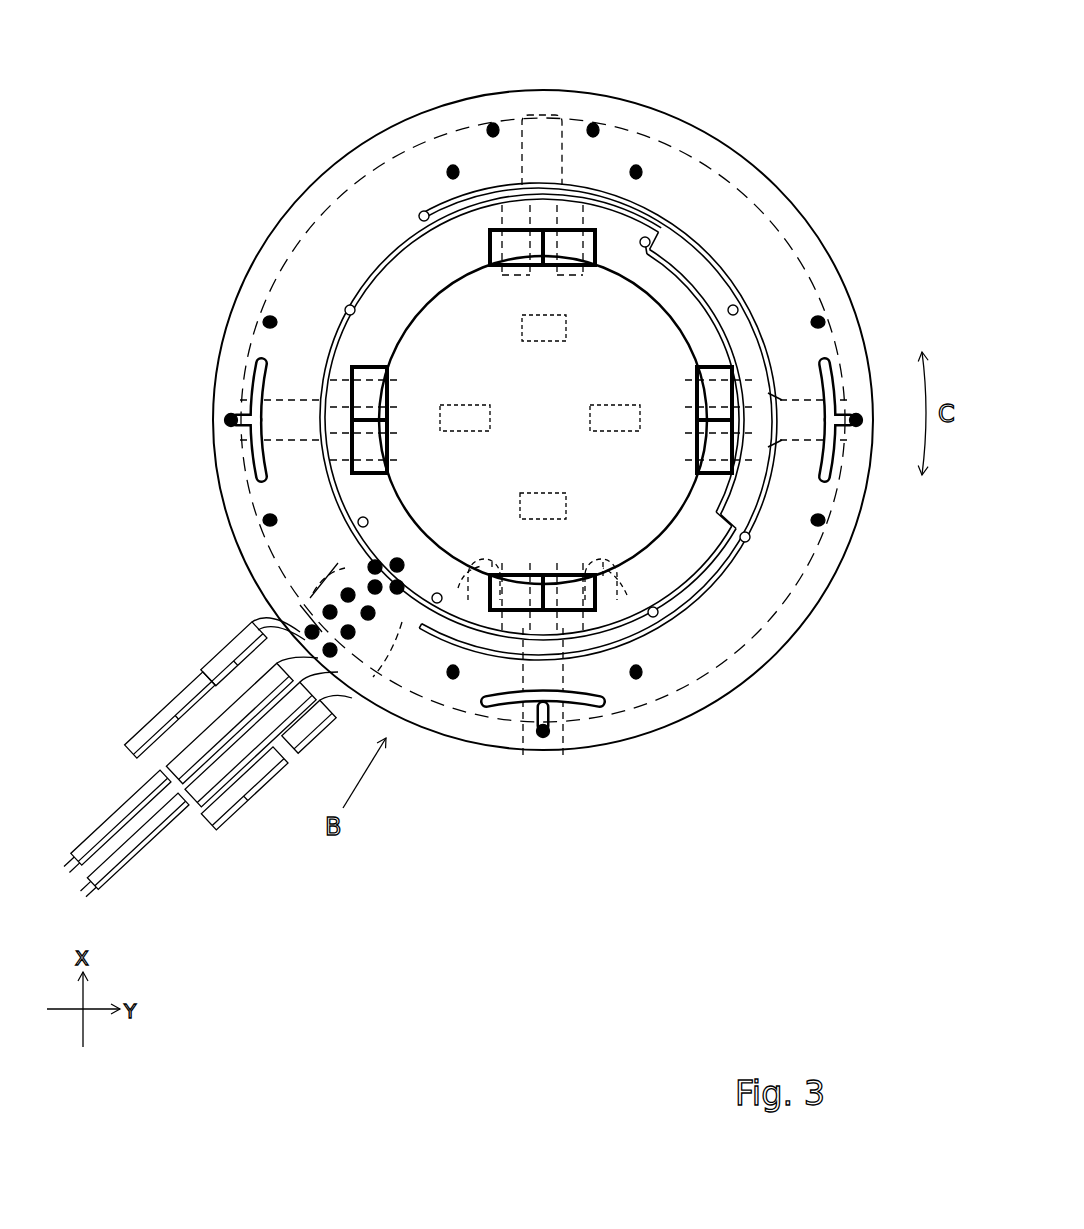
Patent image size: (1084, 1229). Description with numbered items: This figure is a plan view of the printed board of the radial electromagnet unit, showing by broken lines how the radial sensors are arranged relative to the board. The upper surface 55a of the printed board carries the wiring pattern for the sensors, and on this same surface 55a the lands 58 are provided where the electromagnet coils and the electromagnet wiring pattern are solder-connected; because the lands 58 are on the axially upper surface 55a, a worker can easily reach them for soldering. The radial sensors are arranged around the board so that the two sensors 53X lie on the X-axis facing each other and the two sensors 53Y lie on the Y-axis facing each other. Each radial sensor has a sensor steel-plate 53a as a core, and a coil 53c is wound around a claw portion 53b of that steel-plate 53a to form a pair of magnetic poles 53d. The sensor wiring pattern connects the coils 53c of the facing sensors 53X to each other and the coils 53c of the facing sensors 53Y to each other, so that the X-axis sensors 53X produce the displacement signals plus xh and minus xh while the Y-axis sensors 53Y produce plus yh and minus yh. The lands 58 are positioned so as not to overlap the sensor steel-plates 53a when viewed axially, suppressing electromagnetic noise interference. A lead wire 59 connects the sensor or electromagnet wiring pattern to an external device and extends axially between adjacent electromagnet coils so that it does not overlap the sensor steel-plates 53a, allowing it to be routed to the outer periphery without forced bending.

The land 58 is at (591, 125).
The surface of the printed board 55a is at (732, 166).
The radial sensor (X-axis) 53X is at (543, 277).
The radial sensor (Y-axis) 53Y is at (398, 417).
The magnetic pole 53d is at (513, 555).
The sensor steel-plate 53a is at (760, 616).
The claw portion 53b is at (458, 588).
The coil 53c is at (492, 567).
The lead wire 59 is at (345, 600).